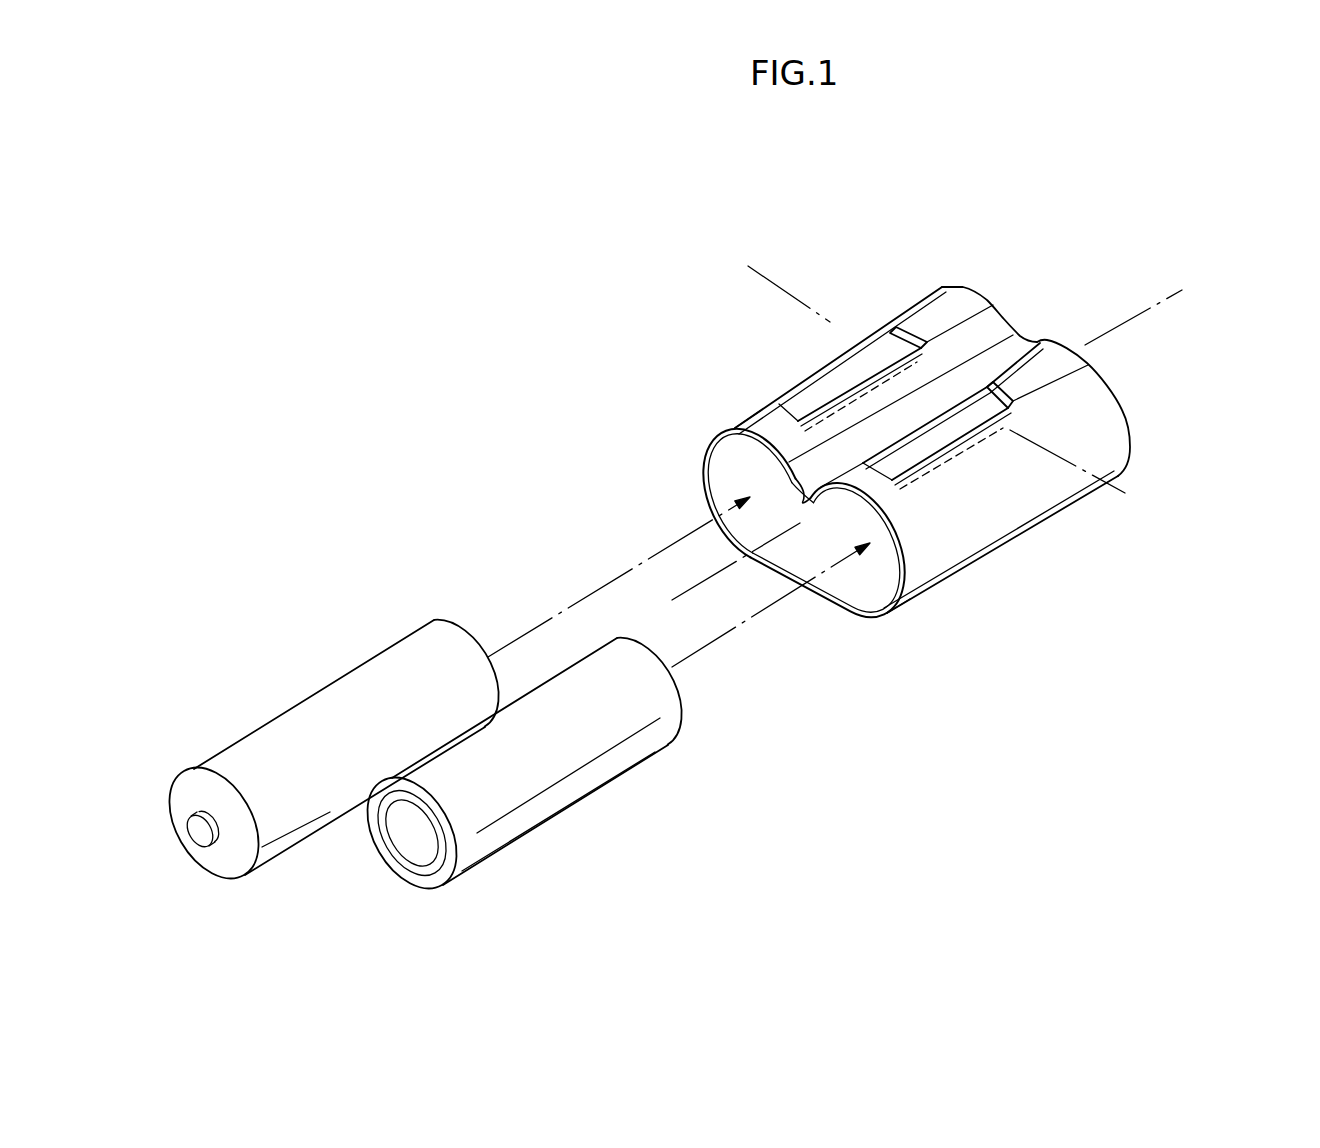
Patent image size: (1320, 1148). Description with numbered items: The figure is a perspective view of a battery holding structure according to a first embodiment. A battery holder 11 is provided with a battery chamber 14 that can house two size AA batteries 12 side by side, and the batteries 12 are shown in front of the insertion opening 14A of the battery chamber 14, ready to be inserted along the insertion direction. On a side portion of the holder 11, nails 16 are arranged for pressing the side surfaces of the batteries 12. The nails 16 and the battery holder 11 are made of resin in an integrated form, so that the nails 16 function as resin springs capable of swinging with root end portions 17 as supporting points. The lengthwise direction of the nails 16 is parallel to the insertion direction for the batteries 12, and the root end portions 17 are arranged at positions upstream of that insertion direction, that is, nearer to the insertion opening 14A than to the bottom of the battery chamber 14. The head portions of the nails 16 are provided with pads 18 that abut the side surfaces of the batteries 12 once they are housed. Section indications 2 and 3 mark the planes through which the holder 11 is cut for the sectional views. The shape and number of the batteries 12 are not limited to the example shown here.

The battery holder 11 is at (977, 279).
The battery 12 is at (315, 823).
The battery chamber 14 is at (863, 598).
The insertion opening 14A is at (718, 482).
The nail 16 is at (820, 392).
The root end portion 17 is at (782, 414).
The pad 18 is at (908, 362).
The section line 2- 2 is at (738, 276).
The section line 3- 3 is at (1190, 296).